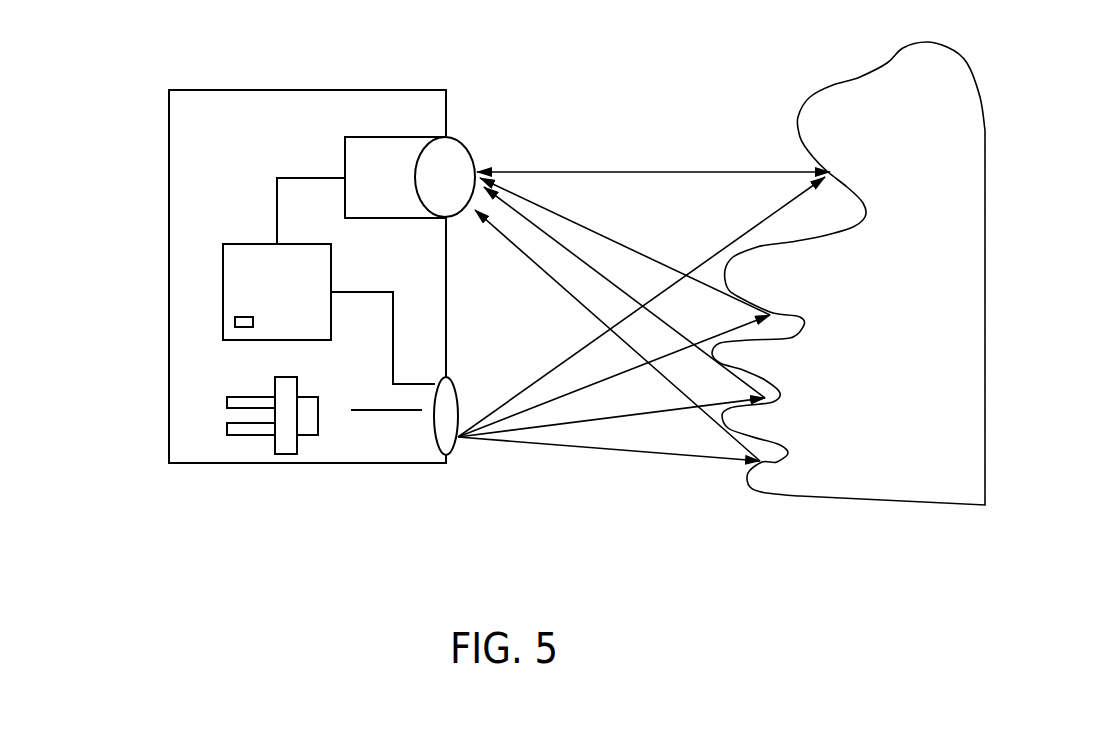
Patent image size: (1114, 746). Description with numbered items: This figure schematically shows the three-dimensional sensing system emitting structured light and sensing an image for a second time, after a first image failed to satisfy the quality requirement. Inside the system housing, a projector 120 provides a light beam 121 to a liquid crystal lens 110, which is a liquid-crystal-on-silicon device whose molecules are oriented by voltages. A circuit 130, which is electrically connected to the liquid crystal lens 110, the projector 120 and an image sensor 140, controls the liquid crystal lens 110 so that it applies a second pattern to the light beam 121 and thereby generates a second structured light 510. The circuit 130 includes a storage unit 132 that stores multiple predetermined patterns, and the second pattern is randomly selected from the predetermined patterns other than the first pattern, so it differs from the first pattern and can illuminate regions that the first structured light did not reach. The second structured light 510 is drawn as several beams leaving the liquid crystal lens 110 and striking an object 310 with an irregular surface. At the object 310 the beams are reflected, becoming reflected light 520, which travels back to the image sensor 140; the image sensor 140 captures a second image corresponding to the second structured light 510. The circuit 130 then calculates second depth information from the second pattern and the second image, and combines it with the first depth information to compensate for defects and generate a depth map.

The liquid crystal lens 110 is at (455, 447).
The projector 120 is at (282, 457).
The light beam 121 is at (388, 410).
The circuit 130 is at (223, 293).
The storage unit 132 is at (235, 319).
The image sensor 140 is at (450, 140).
The object 310 is at (963, 245).
The second structured light 510 is at (552, 371).
The reflected light 520 is at (560, 280).